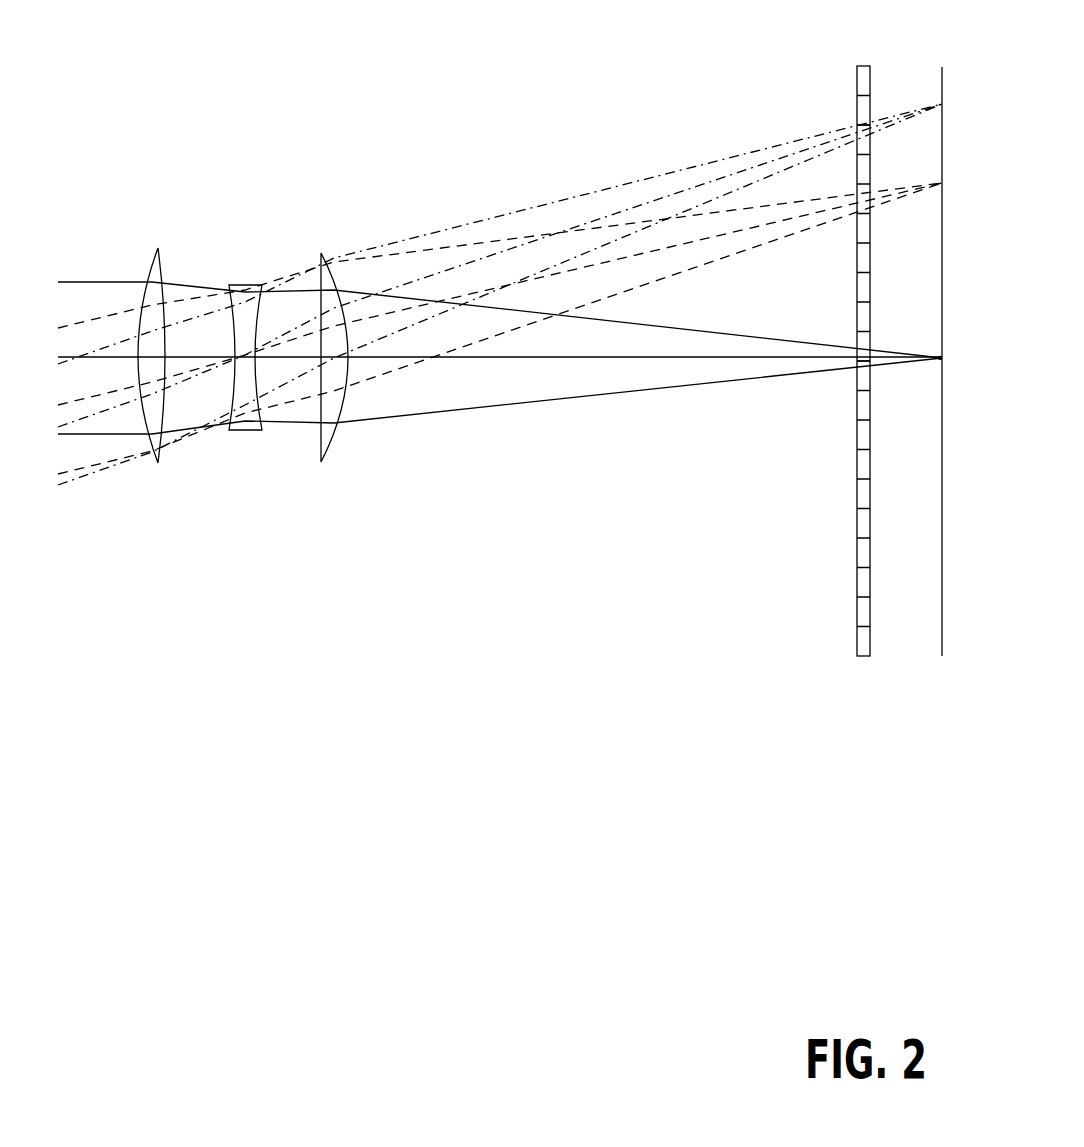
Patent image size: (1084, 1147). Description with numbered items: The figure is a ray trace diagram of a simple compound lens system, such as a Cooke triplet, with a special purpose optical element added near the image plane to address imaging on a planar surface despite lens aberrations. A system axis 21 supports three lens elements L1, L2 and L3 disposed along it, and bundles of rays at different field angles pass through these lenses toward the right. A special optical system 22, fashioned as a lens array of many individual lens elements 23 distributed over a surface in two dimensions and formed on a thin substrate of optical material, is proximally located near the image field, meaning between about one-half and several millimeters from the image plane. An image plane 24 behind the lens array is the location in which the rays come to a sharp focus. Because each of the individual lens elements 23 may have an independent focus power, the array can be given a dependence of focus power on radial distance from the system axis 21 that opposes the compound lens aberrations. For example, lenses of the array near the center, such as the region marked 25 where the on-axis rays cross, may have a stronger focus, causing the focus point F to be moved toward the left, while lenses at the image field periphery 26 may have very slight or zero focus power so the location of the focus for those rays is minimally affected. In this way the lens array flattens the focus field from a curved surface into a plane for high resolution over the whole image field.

The lens element L1 is at (153, 258).
The lens element L2 is at (243, 282).
The lens element L3 is at (317, 260).
The system axis 21 is at (645, 358).
The special optical system 22 is at (857, 480).
The individual lens elements 23 is at (857, 607).
The image plane 24 is at (940, 77).
The pixel receiving on-axis beam 25 is at (855, 369).
The image field periphery 26 is at (857, 123).
The focus point F is at (939, 359).